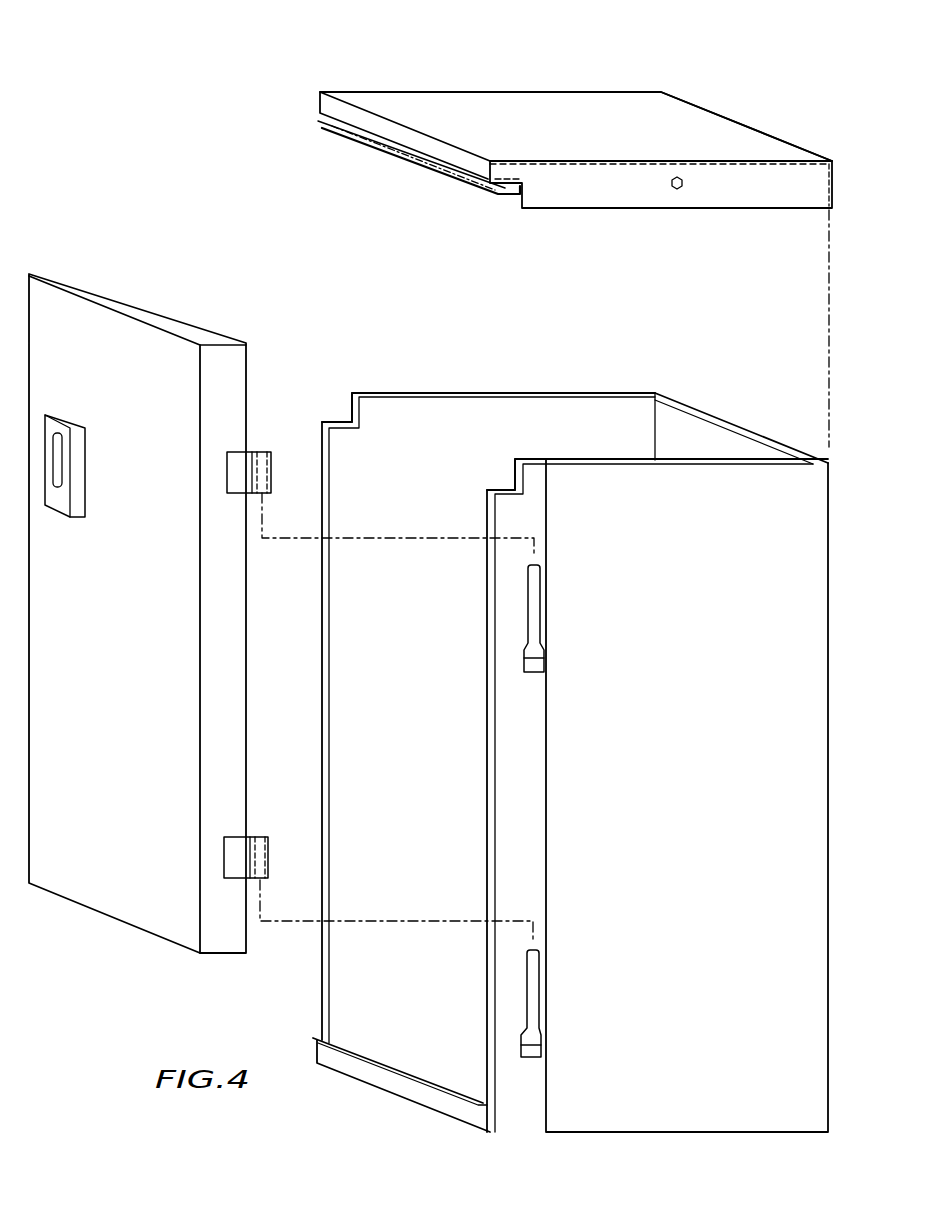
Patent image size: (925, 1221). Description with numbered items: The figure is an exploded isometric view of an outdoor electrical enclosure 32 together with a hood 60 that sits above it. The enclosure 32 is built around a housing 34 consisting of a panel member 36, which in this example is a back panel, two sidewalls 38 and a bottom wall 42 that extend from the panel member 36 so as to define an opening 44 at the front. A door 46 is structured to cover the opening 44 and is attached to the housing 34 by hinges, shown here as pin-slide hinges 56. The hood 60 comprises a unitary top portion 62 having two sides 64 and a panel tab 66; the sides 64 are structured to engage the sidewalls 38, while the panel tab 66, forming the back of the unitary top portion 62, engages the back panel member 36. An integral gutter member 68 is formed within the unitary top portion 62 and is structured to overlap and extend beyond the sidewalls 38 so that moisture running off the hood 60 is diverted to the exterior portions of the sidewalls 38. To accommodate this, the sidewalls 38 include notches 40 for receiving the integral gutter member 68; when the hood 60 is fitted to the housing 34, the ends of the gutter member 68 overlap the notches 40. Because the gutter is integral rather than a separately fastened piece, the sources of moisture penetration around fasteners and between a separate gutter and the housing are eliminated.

The outdoor electrical enclosure 32 is at (652, 1179).
The housing 34 is at (733, 1116).
The panel member 36 is at (722, 420).
The sidewalls 38 is at (551, 770).
The notches 40 is at (345, 398).
The bottom wall 42 is at (364, 1082).
The opening 44 is at (348, 602).
The door 46 is at (164, 892).
The pin-slide hinges 56 is at (262, 448).
The hood 60 is at (575, 112).
The unitary top portion 62 is at (512, 108).
The sides 64 is at (398, 92).
The panel tab 66 is at (740, 122).
The integral gutter member 68 is at (405, 151).